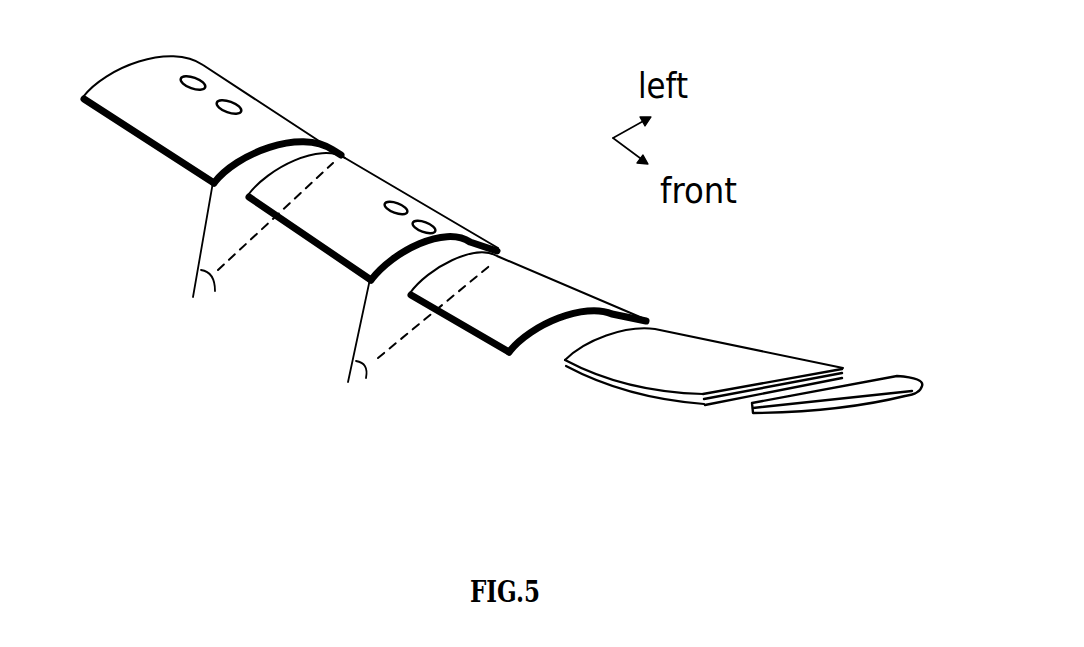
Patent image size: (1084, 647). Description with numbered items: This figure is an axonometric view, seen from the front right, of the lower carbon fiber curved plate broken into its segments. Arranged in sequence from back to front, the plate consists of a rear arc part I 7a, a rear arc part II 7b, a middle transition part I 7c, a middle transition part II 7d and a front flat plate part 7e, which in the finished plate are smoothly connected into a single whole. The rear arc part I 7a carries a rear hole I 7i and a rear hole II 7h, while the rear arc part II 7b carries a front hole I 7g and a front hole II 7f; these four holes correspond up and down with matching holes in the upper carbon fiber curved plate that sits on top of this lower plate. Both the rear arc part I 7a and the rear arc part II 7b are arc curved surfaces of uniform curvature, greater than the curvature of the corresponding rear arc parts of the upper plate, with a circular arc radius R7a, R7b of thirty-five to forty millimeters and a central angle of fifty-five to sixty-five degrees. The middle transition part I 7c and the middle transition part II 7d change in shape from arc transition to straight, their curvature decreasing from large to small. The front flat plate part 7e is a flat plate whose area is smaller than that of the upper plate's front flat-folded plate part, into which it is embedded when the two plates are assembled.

The rear arc part I 7a is at (163, 137).
The rear arc part II 7b is at (300, 217).
The middle transition part I 7c is at (460, 303).
The middle transition part II 7d is at (641, 362).
The front flat plate part 7e is at (827, 397).
The front hole II 7f is at (435, 225).
The front hole I 7g is at (400, 203).
The rear hole II 7h is at (238, 103).
The rear hole I 7i is at (197, 78).
The circular arc radius of rear arc part I R7a is at (200, 260).
The circular arc radius of rear arc part II R7b is at (355, 352).